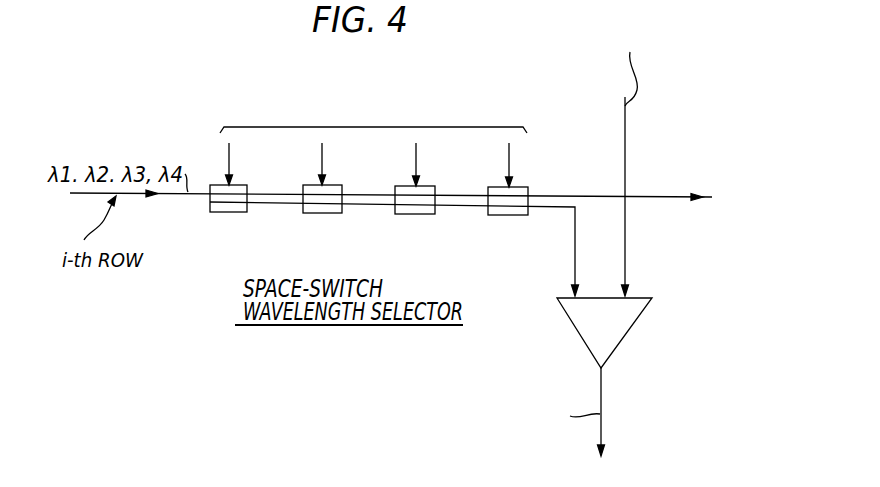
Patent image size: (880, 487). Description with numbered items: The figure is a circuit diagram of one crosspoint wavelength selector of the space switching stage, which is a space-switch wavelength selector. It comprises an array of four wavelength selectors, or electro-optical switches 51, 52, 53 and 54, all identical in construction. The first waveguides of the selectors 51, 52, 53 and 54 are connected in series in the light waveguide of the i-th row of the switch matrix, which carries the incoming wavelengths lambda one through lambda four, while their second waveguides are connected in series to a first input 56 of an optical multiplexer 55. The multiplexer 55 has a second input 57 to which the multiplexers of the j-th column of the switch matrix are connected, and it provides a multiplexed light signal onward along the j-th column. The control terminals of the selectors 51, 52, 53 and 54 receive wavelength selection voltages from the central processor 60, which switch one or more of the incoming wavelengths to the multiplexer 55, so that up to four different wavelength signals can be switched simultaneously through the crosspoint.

The electro-optical switch 51 is at (247, 185).
The electro-optical switch 52 is at (340, 185).
The electro-optical switch 53 is at (432, 186).
The electro-optical switch 54 is at (525, 187).
The optical multiplexer 55 is at (628, 330).
The first input 56 is at (574, 273).
The second input 57 is at (626, 272).
The central processor 60 is at (373, 138).